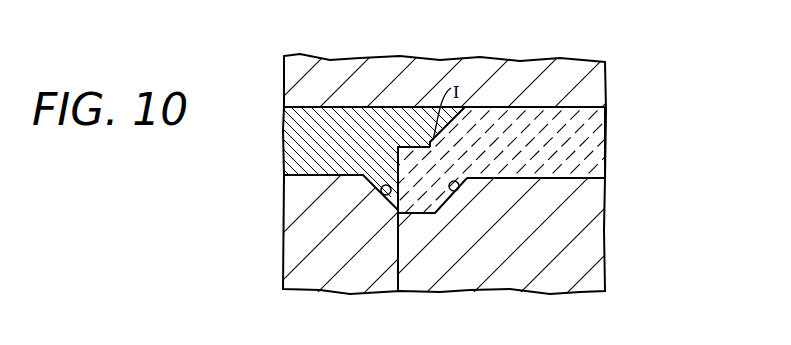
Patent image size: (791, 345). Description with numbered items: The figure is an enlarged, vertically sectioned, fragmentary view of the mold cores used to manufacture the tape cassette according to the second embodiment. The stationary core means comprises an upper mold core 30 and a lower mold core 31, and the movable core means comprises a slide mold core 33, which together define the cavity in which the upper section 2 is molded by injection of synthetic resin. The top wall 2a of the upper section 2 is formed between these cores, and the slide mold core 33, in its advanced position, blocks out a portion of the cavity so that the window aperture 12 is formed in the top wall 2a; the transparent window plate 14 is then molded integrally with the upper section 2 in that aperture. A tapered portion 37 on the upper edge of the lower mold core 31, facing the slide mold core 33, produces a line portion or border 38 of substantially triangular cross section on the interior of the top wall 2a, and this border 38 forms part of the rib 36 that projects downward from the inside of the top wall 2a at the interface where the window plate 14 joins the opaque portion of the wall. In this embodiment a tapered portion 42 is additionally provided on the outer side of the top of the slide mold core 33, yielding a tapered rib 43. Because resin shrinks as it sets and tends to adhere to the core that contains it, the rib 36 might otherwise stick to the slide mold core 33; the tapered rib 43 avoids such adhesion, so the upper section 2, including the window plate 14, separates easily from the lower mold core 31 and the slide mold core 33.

The upper section 2 is at (281, 130).
The top wall 2a is at (312, 165).
The window aperture 12 is at (452, 118).
The transparent window plate 14 is at (609, 138).
The upper mold core 30 is at (532, 75).
The lower mold core 31 is at (298, 248).
The slide mold core 33 is at (585, 228).
The rib 36 is at (421, 168).
The tapered portion 37 is at (389, 195).
The line portion or border 38 is at (396, 165).
The tapered portion 42 is at (459, 191).
The tapered rib 43 is at (443, 207).